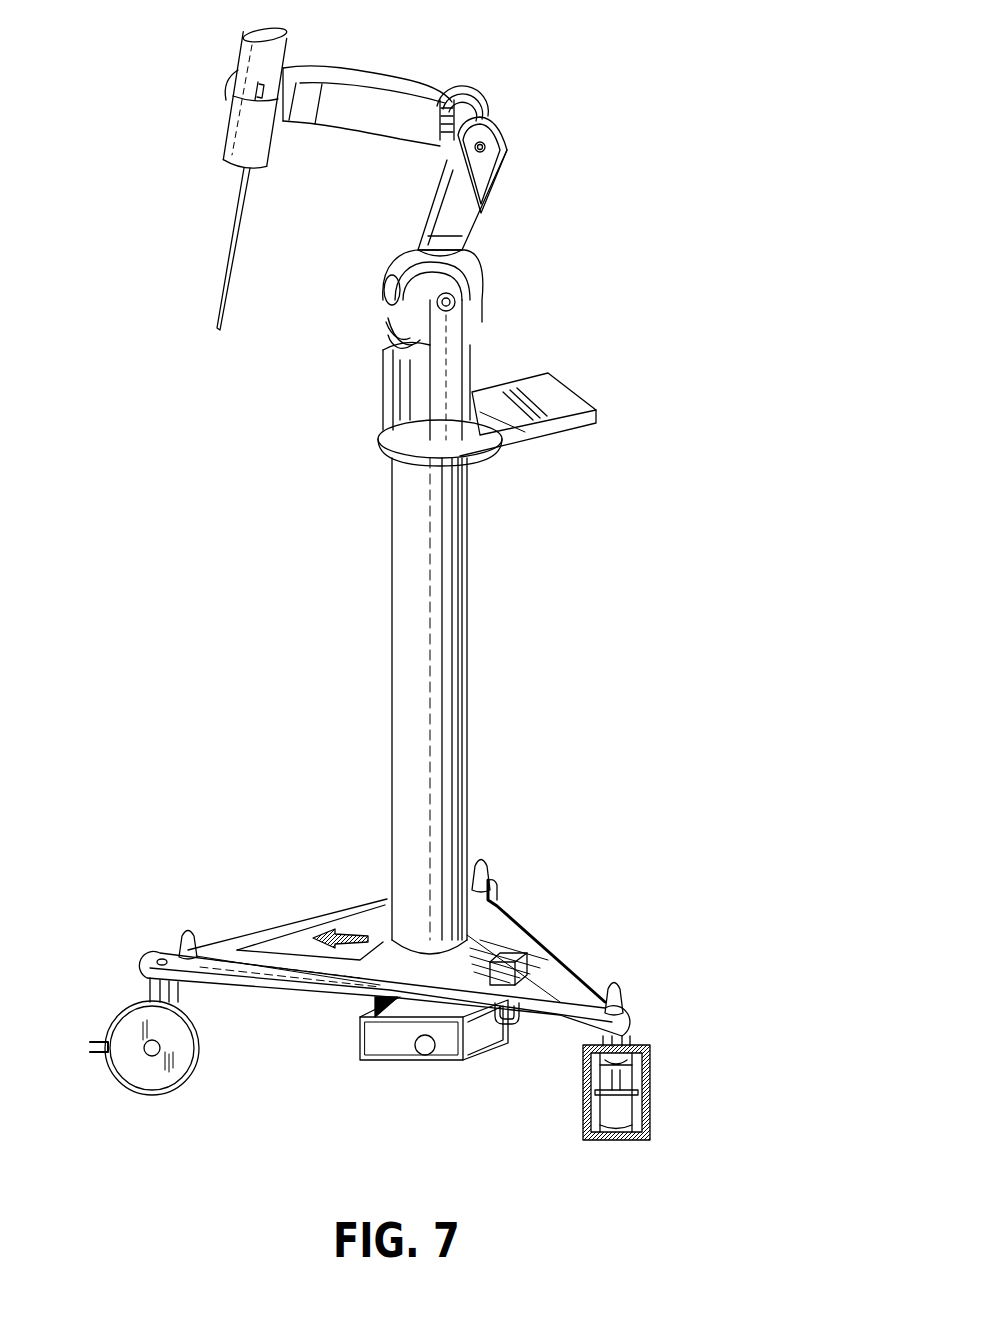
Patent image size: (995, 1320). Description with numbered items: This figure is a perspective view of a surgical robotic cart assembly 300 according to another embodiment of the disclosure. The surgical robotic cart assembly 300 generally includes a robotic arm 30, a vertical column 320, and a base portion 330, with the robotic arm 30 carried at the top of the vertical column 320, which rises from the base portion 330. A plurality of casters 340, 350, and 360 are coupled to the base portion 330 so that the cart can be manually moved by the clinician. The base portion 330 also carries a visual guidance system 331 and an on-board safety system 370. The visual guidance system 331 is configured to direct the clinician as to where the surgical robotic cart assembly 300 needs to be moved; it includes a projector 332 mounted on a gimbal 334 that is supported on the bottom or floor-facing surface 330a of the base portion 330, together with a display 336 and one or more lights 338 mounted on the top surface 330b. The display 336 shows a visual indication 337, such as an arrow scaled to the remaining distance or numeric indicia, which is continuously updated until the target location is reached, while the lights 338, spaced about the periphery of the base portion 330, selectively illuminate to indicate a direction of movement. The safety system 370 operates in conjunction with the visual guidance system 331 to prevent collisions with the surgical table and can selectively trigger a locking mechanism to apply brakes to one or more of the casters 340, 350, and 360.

The robotic arm 30 is at (460, 210).
The surgical robotic cart assembly 300 is at (553, 342).
The vertical column 320 is at (437, 500).
The visual guidance system 331 is at (275, 808).
The base portion 330 is at (572, 990).
The bottom or floor-facing surface 330a is at (296, 997).
The top surface 330b is at (561, 983).
The display 336 is at (268, 940).
The visual indication 337 is at (330, 927).
The light 338 is at (185, 935).
The caster 360 is at (523, 889).
The on-board safety system 370 is at (505, 962).
The gimbal 334 is at (515, 1015).
The projector 332 is at (444, 1060).
The caster 350 is at (180, 1108).
The caster 340 is at (660, 1163).